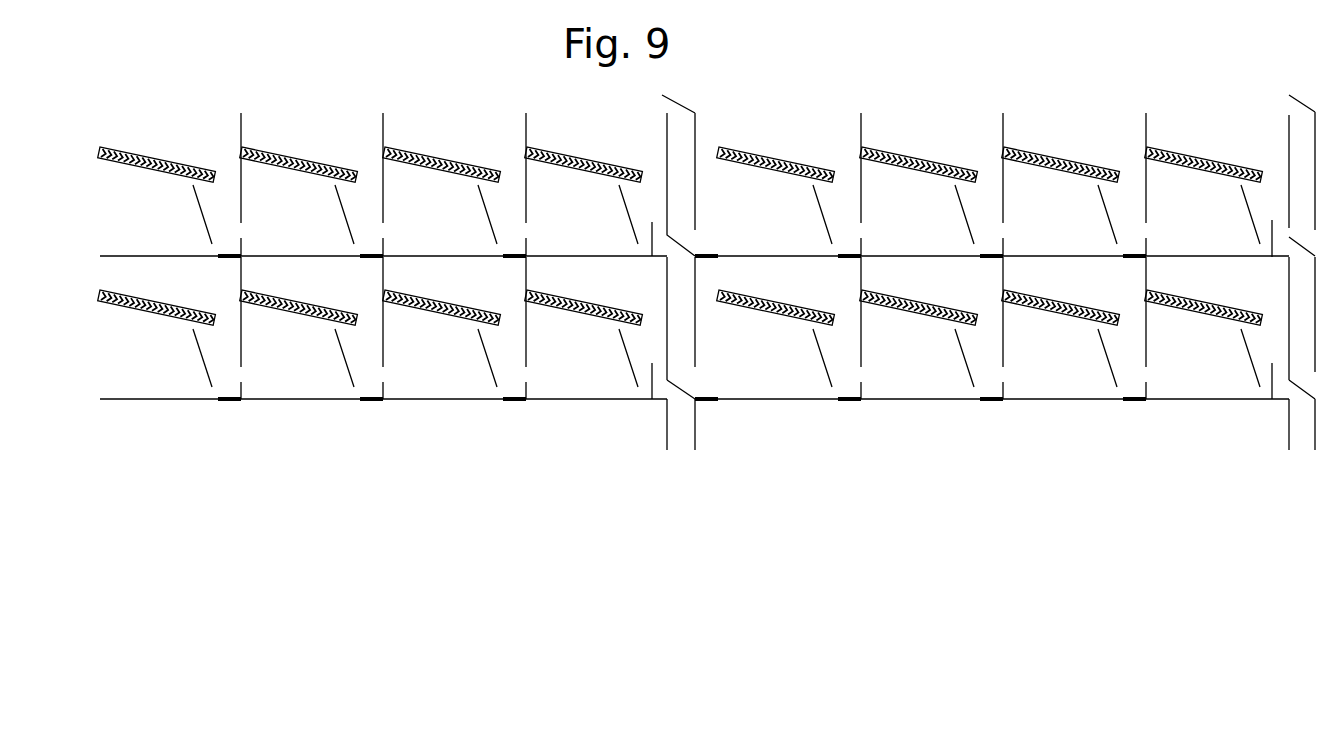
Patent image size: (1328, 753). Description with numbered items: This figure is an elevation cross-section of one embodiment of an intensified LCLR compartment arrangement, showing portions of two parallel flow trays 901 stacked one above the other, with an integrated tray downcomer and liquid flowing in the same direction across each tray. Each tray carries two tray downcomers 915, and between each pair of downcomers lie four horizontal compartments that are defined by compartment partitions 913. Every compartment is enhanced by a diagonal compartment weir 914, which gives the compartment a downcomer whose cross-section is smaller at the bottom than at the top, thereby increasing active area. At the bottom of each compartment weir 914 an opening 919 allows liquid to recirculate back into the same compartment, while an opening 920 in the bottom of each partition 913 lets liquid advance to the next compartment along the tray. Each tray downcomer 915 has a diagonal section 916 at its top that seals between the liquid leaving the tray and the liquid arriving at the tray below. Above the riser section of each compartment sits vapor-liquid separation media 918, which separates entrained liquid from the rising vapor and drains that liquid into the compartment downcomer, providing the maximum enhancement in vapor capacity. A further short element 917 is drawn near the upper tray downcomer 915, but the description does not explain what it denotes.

The parallel flow tray 901 is at (175, 402).
The compartment partition 913 is at (241, 337).
The diagonal compartment weir 914 is at (197, 346).
The tray downcomer 915 is at (695, 337).
The diagonal section 916 is at (681, 390).
The terminal line 917 is at (643, 247).
The vapor-liquid separation media 918 is at (400, 295).
The opening 919 is at (497, 392).
The opening 920 is at (537, 394).